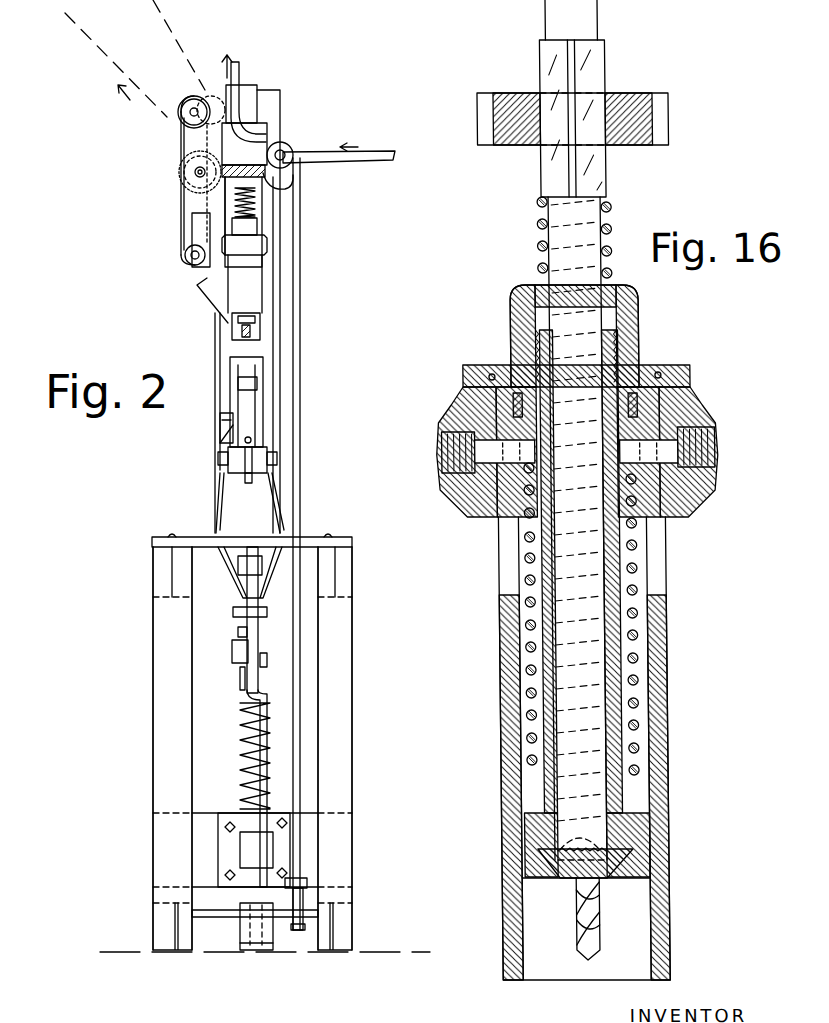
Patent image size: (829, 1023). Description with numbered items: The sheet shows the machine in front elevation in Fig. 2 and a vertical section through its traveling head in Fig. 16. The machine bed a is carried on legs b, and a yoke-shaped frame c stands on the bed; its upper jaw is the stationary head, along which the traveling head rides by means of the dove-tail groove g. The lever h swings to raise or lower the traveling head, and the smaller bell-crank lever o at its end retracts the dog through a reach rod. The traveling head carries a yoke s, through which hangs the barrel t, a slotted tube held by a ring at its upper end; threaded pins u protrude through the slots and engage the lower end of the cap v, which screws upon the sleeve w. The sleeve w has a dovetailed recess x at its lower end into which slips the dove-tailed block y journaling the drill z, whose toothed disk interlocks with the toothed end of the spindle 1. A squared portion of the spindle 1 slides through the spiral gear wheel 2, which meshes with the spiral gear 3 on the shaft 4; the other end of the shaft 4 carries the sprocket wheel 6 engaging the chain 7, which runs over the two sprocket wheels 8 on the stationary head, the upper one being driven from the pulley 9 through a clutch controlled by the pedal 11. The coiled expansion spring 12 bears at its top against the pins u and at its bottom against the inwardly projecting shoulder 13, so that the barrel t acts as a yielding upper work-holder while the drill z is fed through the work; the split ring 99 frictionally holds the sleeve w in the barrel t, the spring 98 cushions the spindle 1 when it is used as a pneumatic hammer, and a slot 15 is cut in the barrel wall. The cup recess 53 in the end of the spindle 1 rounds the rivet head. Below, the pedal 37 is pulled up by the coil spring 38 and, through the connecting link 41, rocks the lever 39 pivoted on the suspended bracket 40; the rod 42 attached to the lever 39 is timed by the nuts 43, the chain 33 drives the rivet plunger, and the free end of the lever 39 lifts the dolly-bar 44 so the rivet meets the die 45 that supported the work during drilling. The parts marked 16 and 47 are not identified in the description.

In FIG. 16, the spindle 1 is at (592, 798).
In FIG. 2, the gear wheel 2 is at (268, 190).
In FIG. 16, the gear wheel 2 is at (664, 112).
In FIG. 2, the spiral gear 3 is at (178, 178).
In FIG. 2, the shaft 4 is at (185, 168).
In FIG. 2, the sprocket wheel 6 is at (183, 198).
In FIG. 2, the chain 7 is at (181, 222).
In FIG. 2, the sprocket wheels 8 is at (186, 104).
In FIG. 2, the pulley 9 is at (188, 96).
In FIG. 2, the pedal 11 is at (307, 882).
In FIG. 16, the coiled expansion spring 12 is at (632, 568).
In FIG. 16, the shoulder 13 is at (530, 784).
In FIG. 2, the slot 15 is at (260, 332).
In FIG. 2, the link 16 is at (197, 285).
In FIG. 2, the chain 33 is at (220, 413).
In FIG. 2, the pedal 37 is at (250, 950).
In FIG. 2, the coil spring 38 is at (240, 742).
In FIG. 2, the lever 39 is at (258, 637).
In FIG. 2, the suspended bracket 40 is at (228, 570).
In FIG. 2, the connecting link 41 is at (267, 694).
In FIG. 2, the rod 42 is at (238, 635).
In FIG. 2, the nuts 43 is at (233, 612).
In FIG. 2, the dolly-bar 44 is at (250, 548).
In FIG. 2, the die 45 is at (252, 370).
In FIG. 2, the slide bar 47 is at (252, 408).
In FIG. 16, the cup recess 53 is at (546, 833).
In FIG. 2, the spring 98 is at (258, 212).
In FIG. 16, the spring 98 is at (534, 232).
In FIG. 16, the expansion ring 99 is at (632, 400).
In FIG. 2, the machine bed a is at (213, 531).
In FIG. 2, the legs b is at (150, 677).
In FIG. 2, the yoke-shaped frame c is at (215, 353).
In FIG. 2, the dove-tail groove g is at (280, 110).
In FIG. 2, the lever h is at (292, 148).
In FIG. 2, the bell-crank lever o is at (296, 170).
In FIG. 2, the yoke s is at (258, 250).
In FIG. 16, the yoke s is at (458, 403).
In FIG. 2, the barrel t is at (245, 284).
In FIG. 16, the barrel t is at (491, 618).
In FIG. 16, the threaded pins u is at (485, 454).
In FIG. 16, the cap v is at (633, 316).
In FIG. 16, the sleeve w is at (608, 352).
In FIG. 16, the dovetailed recess x is at (626, 871).
In FIG. 2, the dove-tailed block y is at (257, 318).
In FIG. 16, the dove-tailed block y is at (603, 880).
In FIG. 2, the drill z is at (232, 331).
In FIG. 16, the drill z is at (567, 949).